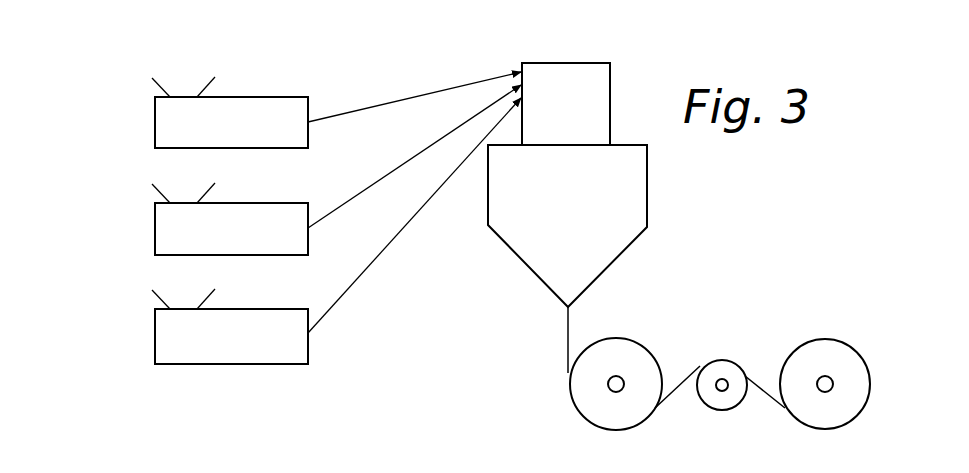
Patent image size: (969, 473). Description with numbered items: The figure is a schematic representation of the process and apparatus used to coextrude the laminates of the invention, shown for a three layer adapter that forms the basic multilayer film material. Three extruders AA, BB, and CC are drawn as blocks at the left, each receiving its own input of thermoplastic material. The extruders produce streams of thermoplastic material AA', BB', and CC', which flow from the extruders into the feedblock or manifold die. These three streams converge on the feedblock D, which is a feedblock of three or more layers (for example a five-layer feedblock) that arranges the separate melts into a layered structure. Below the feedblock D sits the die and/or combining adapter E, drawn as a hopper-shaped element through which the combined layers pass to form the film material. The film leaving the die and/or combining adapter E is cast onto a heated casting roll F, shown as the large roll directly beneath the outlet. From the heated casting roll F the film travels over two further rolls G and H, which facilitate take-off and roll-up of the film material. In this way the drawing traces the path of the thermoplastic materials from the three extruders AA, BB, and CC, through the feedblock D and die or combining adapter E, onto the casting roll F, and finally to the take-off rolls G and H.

The extruder AA is at (230, 112).
The stream of thermoplastic material AA' is at (105, 61).
The extruder BB is at (230, 219).
The stream of thermoplastic material BB' is at (106, 167).
The extruder CC is at (230, 326).
The stream of thermoplastic material CC' is at (106, 276).
The feedblock D is at (612, 85).
The die and/or combining adapter E is at (647, 185).
The heated casting roll F is at (635, 343).
The roll G is at (725, 358).
The roll H is at (815, 338).